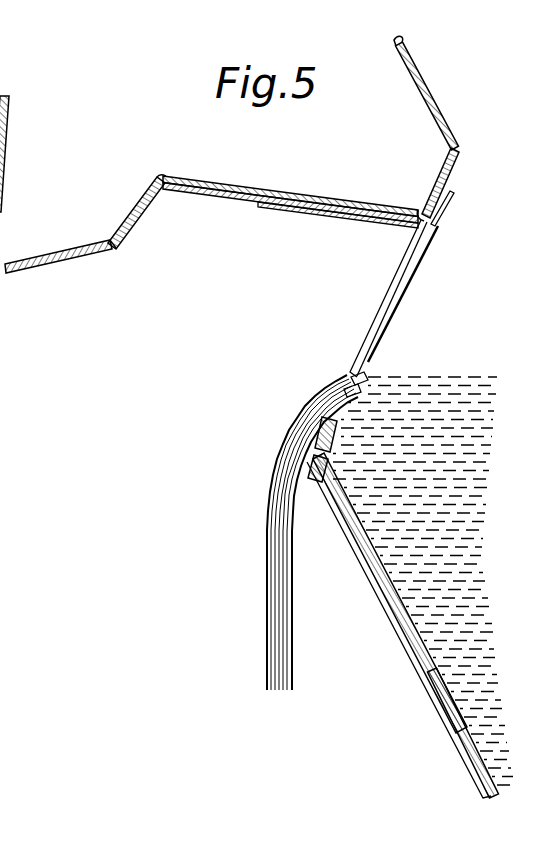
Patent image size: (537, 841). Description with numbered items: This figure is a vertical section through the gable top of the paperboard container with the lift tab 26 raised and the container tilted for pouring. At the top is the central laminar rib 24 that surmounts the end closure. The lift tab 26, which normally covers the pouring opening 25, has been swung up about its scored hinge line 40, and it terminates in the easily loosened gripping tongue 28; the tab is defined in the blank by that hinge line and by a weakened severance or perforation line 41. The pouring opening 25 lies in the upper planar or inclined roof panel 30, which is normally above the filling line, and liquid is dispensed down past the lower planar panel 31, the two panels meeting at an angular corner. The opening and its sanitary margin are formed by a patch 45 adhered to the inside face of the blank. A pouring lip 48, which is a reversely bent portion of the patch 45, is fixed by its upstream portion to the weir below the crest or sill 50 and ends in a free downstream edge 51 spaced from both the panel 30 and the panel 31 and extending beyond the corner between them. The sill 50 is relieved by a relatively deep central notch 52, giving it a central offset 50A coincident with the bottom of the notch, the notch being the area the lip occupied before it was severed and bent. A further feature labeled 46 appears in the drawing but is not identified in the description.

The central laminar rib 24 is at (424, 99).
The pouring opening 25 is at (430, 245).
The lift tab 26 is at (241, 187).
The gripping tongue 28 is at (56, 263).
The upper planar panel 30 is at (403, 255).
The lower planar panel 31 is at (458, 727).
The scored hinge line 40 is at (428, 214).
The weakened severance line 41 is at (375, 322).
The patch 45 is at (447, 697).
The step plate 46 is at (290, 212).
The pouring lip 48 is at (320, 438).
The weir sill 50 is at (370, 362).
The central offset 50A is at (322, 398).
The free downstream edge 51 is at (306, 474).
The central notch 52 is at (357, 372).